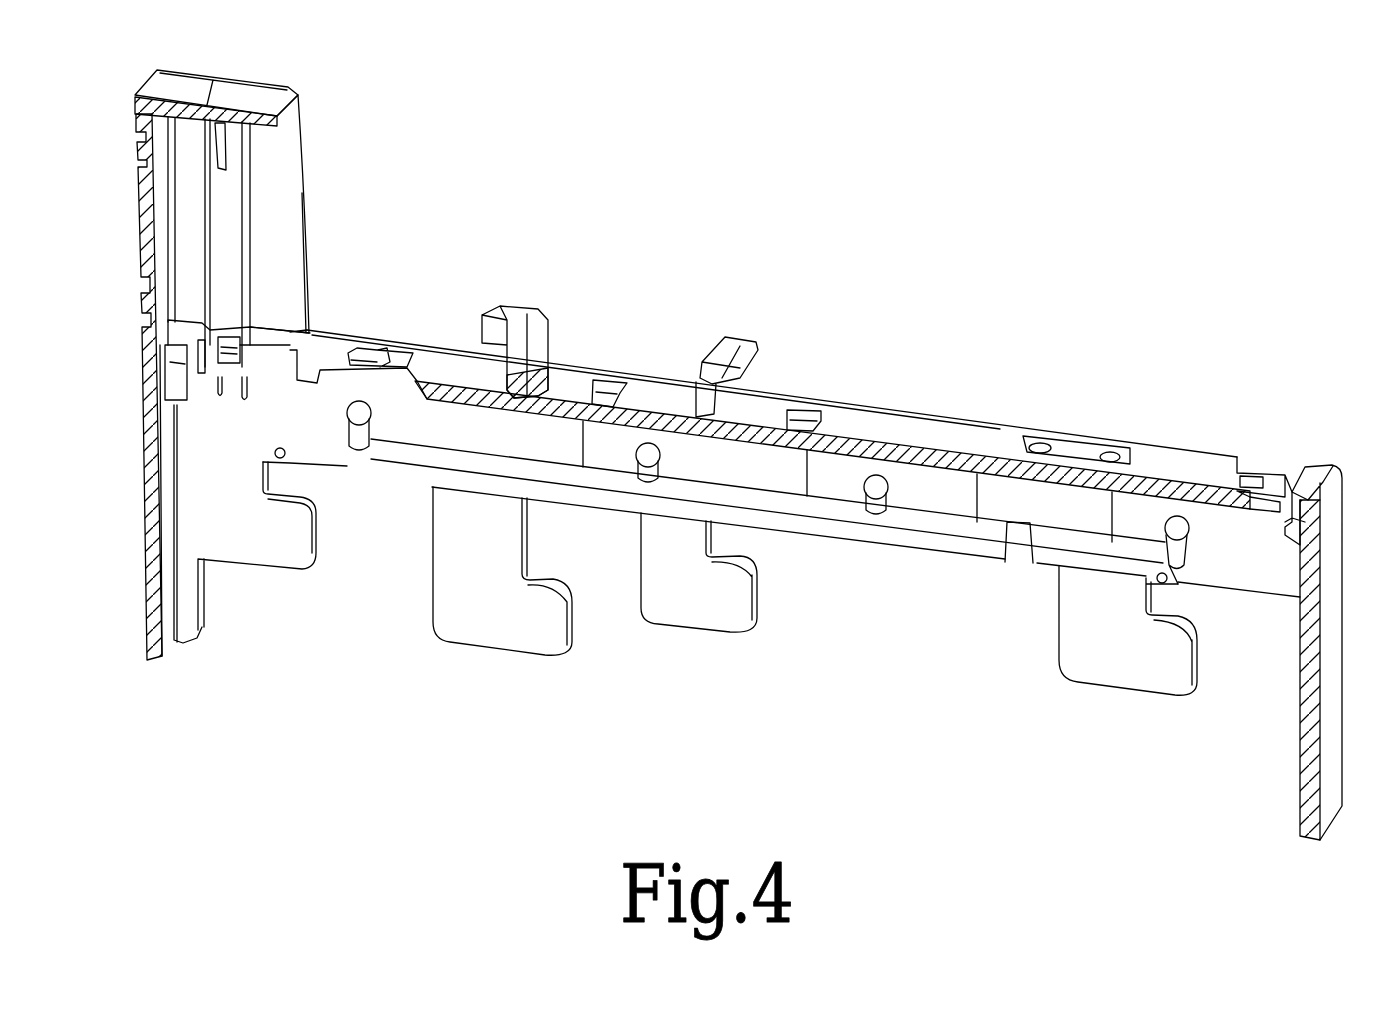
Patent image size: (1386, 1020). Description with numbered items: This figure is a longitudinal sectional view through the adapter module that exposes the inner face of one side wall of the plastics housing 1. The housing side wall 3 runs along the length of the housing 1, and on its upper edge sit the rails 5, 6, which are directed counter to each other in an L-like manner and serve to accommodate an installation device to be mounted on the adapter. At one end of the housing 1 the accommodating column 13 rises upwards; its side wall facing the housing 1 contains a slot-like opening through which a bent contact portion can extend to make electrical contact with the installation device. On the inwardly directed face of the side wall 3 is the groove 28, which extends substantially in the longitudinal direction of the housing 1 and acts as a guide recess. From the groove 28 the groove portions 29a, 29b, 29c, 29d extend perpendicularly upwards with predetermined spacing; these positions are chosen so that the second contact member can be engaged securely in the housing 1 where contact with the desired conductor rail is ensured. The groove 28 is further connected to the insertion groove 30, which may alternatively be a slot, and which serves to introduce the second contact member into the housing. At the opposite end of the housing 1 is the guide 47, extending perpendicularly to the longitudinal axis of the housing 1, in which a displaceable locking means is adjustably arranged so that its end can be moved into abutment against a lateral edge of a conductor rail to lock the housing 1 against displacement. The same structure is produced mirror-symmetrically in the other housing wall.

The housing 1 is at (882, 364).
The housing side wall 3 is at (972, 436).
The rail 5 is at (510, 322).
The rail 6 is at (733, 355).
The accommodating column 13 is at (277, 160).
The groove 28 is at (421, 455).
The groove portion 29a is at (358, 416).
The groove portion 29b is at (648, 455).
The groove portion 29c is at (875, 487).
The groove portion 29d is at (1178, 531).
The insertion groove 30 is at (1018, 548).
The guide 47 is at (1258, 470).